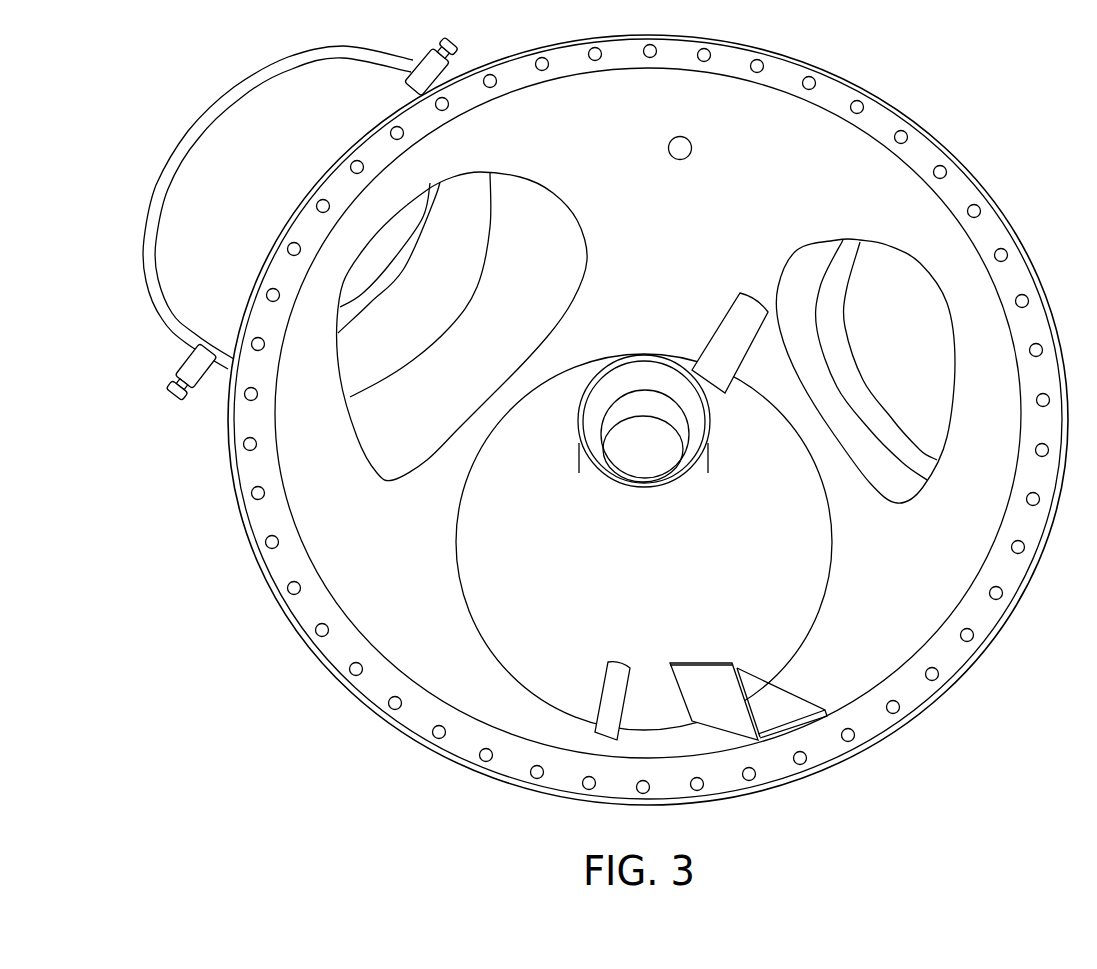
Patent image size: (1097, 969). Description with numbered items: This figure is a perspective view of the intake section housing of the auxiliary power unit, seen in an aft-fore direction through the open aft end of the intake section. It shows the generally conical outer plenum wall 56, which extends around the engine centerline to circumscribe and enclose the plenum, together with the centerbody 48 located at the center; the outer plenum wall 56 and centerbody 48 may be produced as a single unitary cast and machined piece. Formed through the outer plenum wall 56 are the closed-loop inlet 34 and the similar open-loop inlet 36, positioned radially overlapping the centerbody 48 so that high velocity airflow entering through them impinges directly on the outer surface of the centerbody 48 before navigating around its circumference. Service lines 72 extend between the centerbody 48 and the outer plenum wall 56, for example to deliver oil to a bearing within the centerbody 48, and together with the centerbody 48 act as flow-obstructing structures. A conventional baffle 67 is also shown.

The closed-loop inlet 34 is at (876, 363).
The open-loop inlet 36 is at (406, 304).
The centerbody 48 is at (468, 540).
The outer plenum wall 56 is at (731, 174).
The baffle 67 is at (711, 673).
The service lines 72 is at (727, 326).